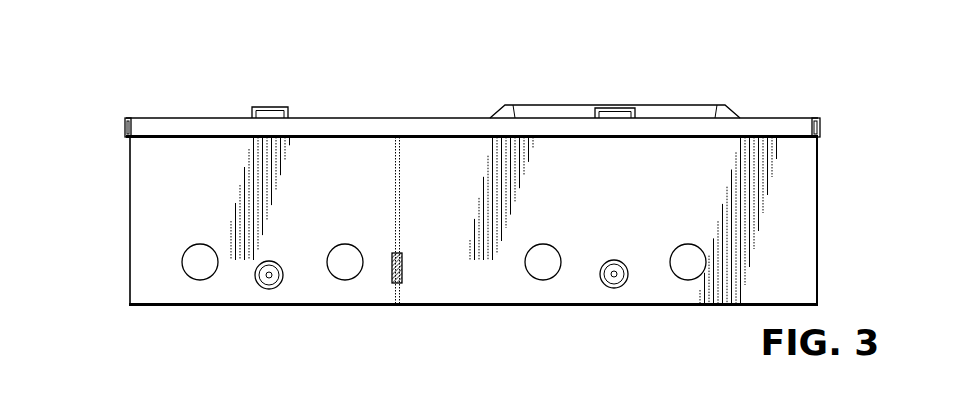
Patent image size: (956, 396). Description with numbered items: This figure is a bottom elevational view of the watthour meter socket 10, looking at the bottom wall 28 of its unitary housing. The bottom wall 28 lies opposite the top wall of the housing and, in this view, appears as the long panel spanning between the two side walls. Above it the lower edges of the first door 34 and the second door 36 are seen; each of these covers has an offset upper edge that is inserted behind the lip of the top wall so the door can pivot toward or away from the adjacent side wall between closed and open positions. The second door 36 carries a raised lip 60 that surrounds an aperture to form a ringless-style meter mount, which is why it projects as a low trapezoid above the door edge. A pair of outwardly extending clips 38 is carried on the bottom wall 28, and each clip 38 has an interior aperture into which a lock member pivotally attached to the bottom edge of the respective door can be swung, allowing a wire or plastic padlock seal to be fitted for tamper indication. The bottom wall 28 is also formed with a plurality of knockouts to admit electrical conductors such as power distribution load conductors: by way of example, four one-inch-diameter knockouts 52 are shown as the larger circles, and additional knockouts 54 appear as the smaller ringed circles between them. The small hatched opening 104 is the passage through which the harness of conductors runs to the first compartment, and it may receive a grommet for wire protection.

The watthour meter socket 10 is at (108, 118).
The bottom wall 28 is at (140, 199).
The first door 34 is at (165, 118).
The second door 36 is at (785, 118).
The clip 38 is at (265, 107).
The raised lip 60 is at (687, 113).
The knockout 52 is at (187, 276).
The additional knockout 54 is at (281, 284).
The opening 104 is at (403, 268).